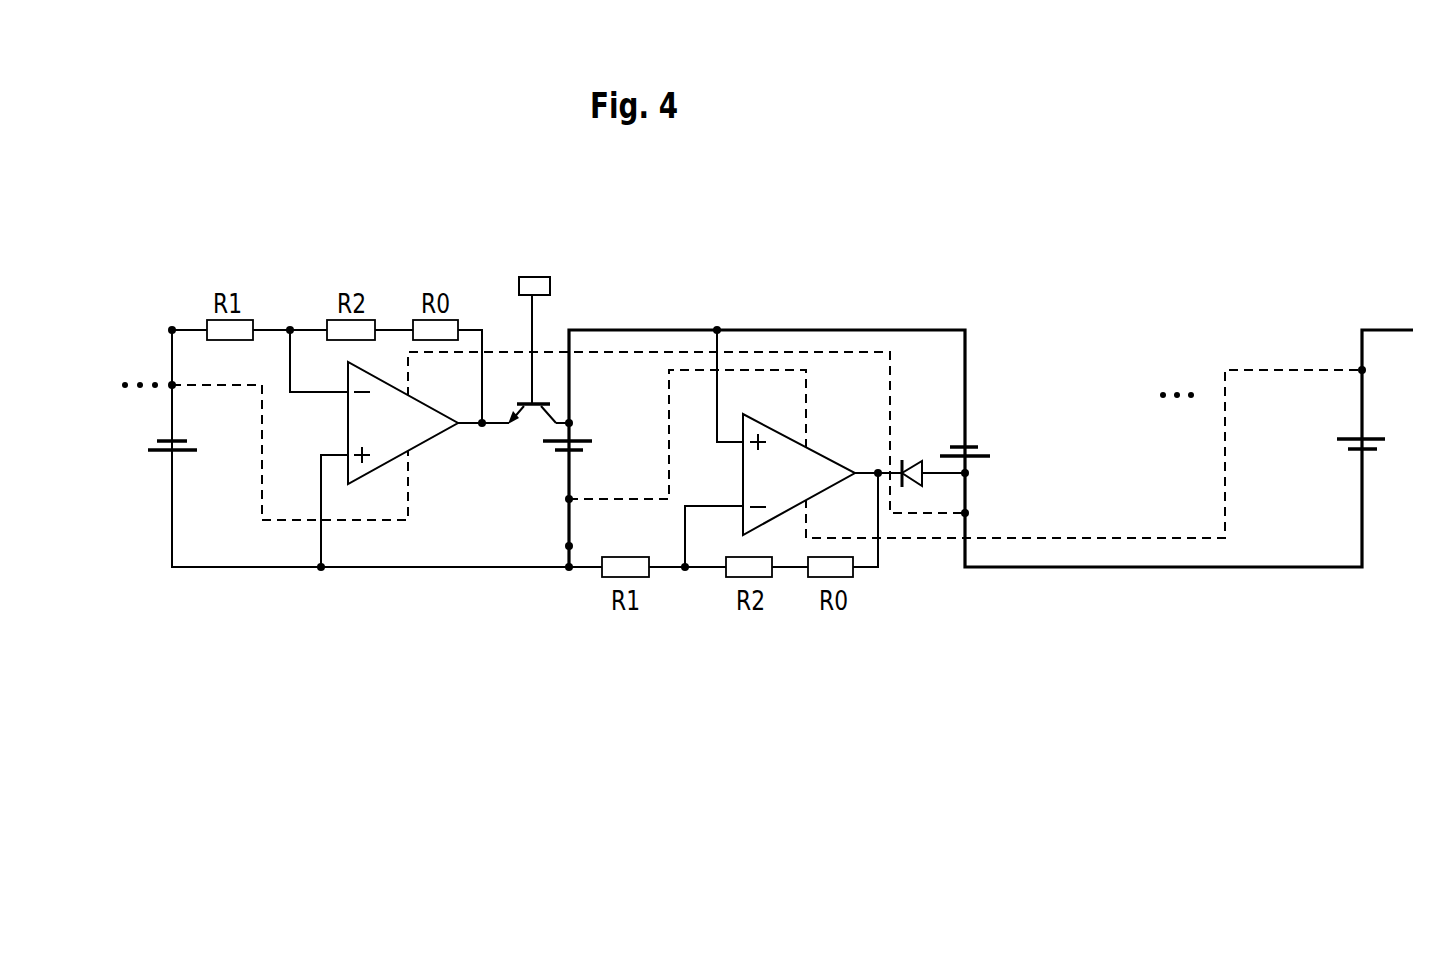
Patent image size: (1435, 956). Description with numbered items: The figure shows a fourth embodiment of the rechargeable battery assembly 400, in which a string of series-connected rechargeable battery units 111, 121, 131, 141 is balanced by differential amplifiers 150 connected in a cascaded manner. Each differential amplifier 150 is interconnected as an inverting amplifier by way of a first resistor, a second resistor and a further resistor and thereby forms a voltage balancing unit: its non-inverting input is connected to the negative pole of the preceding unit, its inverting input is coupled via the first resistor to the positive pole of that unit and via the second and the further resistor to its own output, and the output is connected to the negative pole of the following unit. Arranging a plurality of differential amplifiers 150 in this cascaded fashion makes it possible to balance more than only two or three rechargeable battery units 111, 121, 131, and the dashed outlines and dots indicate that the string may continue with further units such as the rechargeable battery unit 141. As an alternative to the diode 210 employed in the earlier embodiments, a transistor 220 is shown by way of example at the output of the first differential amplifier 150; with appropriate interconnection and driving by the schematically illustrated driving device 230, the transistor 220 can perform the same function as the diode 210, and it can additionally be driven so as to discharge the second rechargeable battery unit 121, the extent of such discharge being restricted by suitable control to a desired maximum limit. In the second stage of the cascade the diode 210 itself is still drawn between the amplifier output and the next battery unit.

The first rechargeable battery unit 111 is at (190, 452).
The second rechargeable battery unit 121 is at (575, 439).
The third rechargeable battery unit 131 is at (972, 446).
The fourth rechargeable battery unit 141 is at (1352, 452).
The differential amplifier 150 is at (447, 437).
The diode 210 is at (912, 490).
The transistor 220 is at (518, 400).
The driving device 230 is at (536, 277).
The rechargeable battery assembly 400 is at (900, 306).